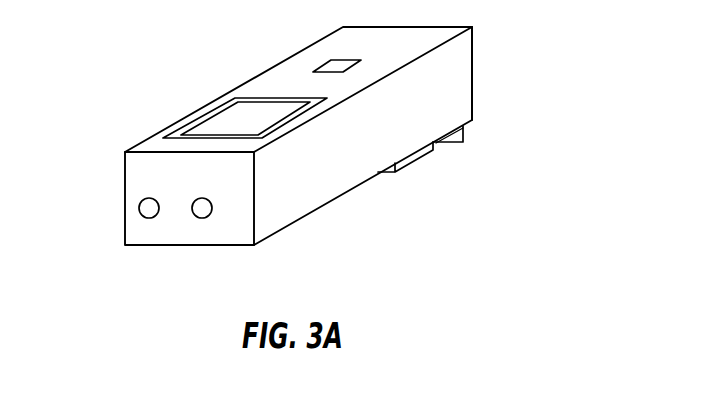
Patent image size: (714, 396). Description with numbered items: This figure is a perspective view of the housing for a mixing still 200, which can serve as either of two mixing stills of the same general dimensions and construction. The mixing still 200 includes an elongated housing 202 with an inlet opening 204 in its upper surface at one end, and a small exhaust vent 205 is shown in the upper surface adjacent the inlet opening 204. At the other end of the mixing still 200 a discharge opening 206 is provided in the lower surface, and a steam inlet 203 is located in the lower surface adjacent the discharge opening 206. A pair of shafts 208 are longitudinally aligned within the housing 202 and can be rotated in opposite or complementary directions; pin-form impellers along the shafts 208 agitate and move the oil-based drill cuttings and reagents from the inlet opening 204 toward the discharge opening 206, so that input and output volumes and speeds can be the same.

The mixing still 200 is at (318, 198).
The housing 202 is at (462, 72).
The steam inlet 203 is at (457, 141).
The inlet opening 204 is at (222, 118).
The small opening in top face 205 is at (333, 65).
The discharge opening 206 is at (403, 170).
The shafts 208 is at (140, 207).